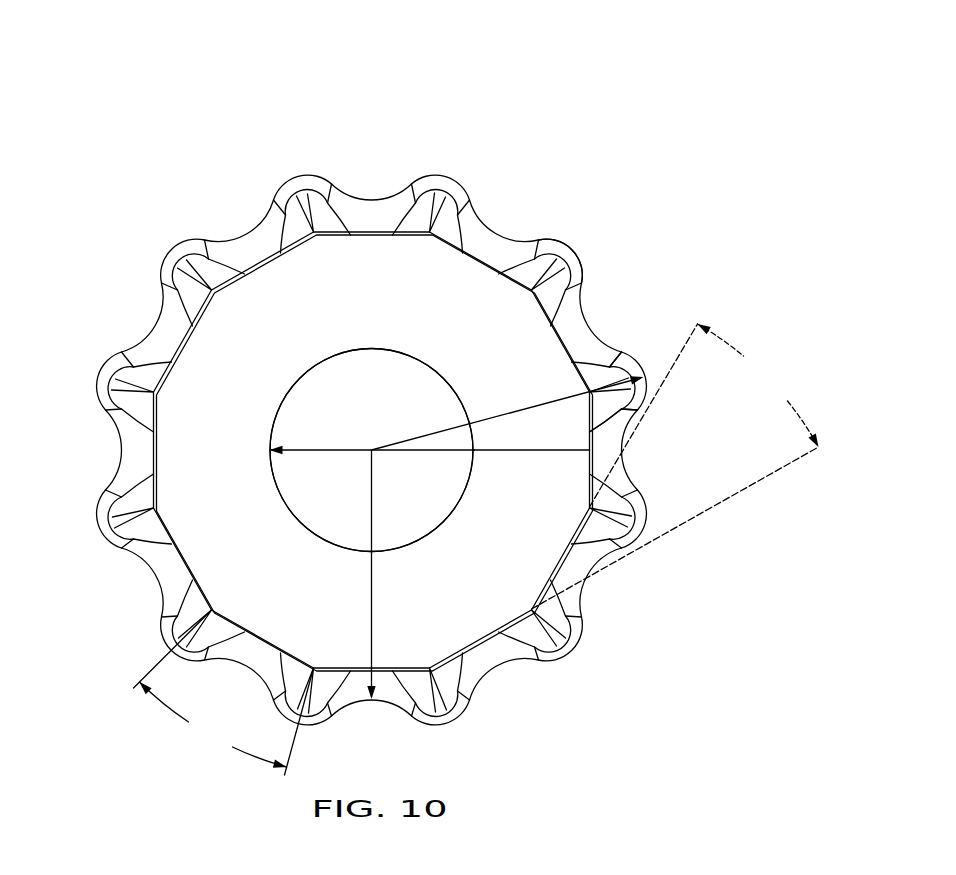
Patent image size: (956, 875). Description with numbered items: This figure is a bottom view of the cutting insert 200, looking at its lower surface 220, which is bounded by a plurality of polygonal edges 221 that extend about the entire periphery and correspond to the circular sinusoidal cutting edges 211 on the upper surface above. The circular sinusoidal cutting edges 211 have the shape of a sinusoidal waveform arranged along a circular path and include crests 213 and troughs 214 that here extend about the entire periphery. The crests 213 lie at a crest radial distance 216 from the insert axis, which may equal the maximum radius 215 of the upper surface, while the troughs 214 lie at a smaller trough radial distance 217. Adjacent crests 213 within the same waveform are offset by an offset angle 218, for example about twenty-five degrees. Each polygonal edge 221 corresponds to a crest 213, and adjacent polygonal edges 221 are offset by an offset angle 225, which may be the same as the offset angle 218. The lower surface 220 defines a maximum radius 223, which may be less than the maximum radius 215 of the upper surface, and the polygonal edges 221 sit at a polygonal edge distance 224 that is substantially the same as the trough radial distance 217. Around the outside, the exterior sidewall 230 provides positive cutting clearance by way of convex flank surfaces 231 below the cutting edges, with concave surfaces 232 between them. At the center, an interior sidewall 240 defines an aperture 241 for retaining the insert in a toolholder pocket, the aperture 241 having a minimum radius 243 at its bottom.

The cutting insert 200 is at (132, 151).
The circular sinusoidal cutting edges 211 is at (372, 122).
The crests 213 is at (299, 174).
The troughs 214 is at (153, 326).
The maximum radius of the upper surface 215 is at (637, 389).
The crest radial distance 216 is at (534, 405).
The trough radial distance 217 is at (371, 622).
The offset angle 218 is at (224, 692).
The lower surface 220 is at (396, 318).
The polygonal edges 221 is at (168, 478).
The maximum radius of the lower surface 223 is at (567, 455).
The polygonal edge distance 224 is at (510, 455).
The offset angle 225 is at (675, 466).
The exterior sidewall 230 is at (489, 240).
The convex flank surfaces 231 is at (640, 400).
The concave surfaces 232 is at (620, 452).
The interior sidewall 240 is at (440, 538).
The aperture 241 is at (289, 503).
The minimum radius of the aperture 243 is at (325, 449).